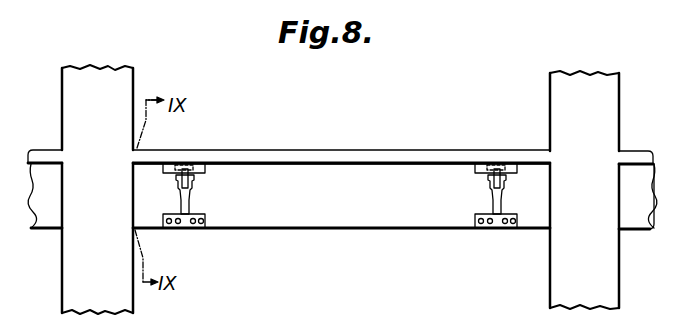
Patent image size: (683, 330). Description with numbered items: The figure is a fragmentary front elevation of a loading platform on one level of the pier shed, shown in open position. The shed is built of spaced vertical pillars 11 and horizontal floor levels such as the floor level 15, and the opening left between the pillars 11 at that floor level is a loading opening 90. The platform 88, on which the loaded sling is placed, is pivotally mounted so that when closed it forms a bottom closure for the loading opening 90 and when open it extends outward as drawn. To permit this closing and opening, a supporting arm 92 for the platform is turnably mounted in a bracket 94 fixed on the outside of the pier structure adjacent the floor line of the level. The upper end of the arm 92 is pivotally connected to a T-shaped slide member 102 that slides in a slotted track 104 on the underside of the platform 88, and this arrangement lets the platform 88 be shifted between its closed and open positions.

The vertical pillar 11 is at (62, 110).
The horizontal floor level 15 is at (367, 220).
The platform 88 is at (369, 157).
The loading opening 90 is at (333, 145).
The supporting arm 92 is at (190, 205).
The bracket 94 is at (198, 229).
The T-shaped slide member 102 is at (187, 165).
The slotted track 104 is at (205, 170).